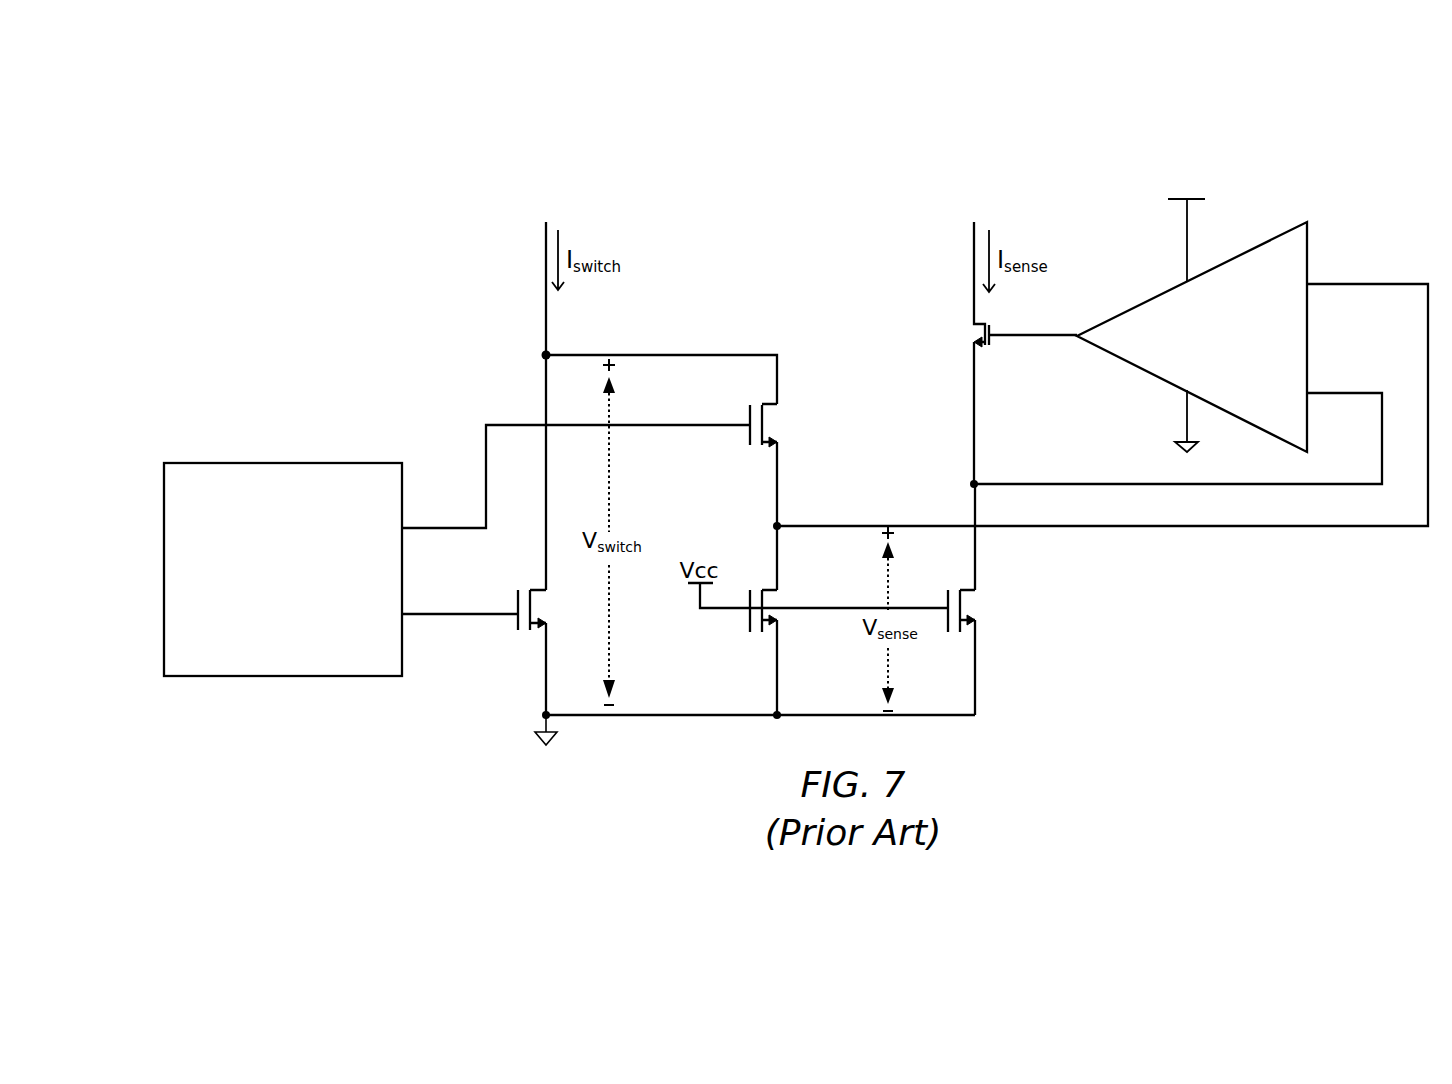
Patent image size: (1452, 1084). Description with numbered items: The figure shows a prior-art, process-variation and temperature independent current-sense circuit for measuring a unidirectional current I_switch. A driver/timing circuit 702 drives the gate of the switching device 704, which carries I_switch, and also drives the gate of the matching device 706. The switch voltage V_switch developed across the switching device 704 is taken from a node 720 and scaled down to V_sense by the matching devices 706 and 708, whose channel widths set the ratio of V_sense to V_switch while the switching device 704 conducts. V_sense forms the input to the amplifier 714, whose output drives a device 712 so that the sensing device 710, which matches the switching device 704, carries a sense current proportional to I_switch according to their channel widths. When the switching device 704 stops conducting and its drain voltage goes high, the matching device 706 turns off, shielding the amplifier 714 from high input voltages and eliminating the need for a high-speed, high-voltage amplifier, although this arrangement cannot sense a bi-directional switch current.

The driver/timing circuit 702 is at (262, 461).
The switching device 704 is at (532, 588).
The matching device 706 is at (767, 403).
The matching device 708 is at (762, 608).
The sensing device 710 is at (962, 588).
The sense transistor 712 is at (985, 350).
The amplifier 714 is at (1140, 300).
The node 720 is at (548, 353).